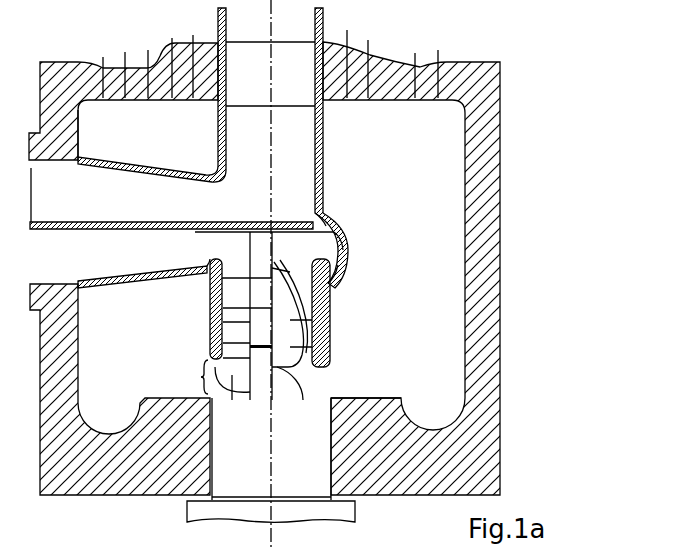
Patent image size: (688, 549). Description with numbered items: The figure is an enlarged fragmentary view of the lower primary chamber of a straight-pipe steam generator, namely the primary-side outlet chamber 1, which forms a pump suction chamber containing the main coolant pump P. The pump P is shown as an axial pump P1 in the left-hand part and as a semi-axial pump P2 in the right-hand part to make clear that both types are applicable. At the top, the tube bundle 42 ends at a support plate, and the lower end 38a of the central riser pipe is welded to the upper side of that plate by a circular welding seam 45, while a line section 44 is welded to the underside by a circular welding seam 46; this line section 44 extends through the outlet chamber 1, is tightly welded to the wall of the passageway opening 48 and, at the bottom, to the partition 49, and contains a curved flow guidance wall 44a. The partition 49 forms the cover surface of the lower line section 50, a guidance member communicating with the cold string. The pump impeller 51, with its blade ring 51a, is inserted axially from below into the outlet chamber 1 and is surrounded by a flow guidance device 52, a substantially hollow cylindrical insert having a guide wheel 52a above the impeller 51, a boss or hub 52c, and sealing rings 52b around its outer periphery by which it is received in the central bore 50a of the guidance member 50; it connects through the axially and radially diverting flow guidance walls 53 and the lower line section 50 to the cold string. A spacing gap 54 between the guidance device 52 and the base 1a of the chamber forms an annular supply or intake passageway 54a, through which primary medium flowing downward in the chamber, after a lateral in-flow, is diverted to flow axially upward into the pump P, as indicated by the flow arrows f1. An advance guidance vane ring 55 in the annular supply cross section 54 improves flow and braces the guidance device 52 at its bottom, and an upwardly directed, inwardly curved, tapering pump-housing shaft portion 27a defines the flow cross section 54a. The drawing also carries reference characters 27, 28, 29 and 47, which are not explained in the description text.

The primary-side outlet chamber 1 is at (425, 253).
The base of the outlet chamber 1a is at (389, 397).
The connecting pipe 27 is at (297, 468).
The pump-housing shaft portion 27a is at (246, 392).
The outlet port 28 is at (327, 453).
The housing bottom wall 29 is at (187, 445).
The lower end of the riser pipe 38a is at (324, 19).
The tube bundle 42 is at (392, 50).
The line section 44 is at (227, 145).
The curved flow guidance wall 44a is at (306, 214).
The circular welding seam 45 is at (262, 43).
The circular welding seam 46 is at (278, 110).
The annular chamber 47 is at (79, 157).
The passageway opening 48 is at (58, 168).
The partition 49 is at (153, 221).
The lower line section 50 is at (145, 278).
The central bore of the guidance member 50a is at (208, 261).
The impeller 51 is at (305, 338).
The blade ring of the impeller 51a is at (237, 330).
The flow guidance device 52 is at (331, 298).
The guide wheel 52a is at (222, 310).
The sealing rings 52b is at (213, 287).
The boss or hub of the guidance device 52c is at (343, 250).
The flow guidance walls 53 is at (340, 232).
The spacing gap 54 is at (203, 377).
The supply or intake passageway 54a is at (236, 390).
The advance guidance vane ring 55 is at (305, 390).
The main coolant pump P is at (378, 369).
The axial pump P1 is at (222, 337).
The semi-axial pump P2 is at (310, 322).
The flow arrow f1 is at (149, 105).